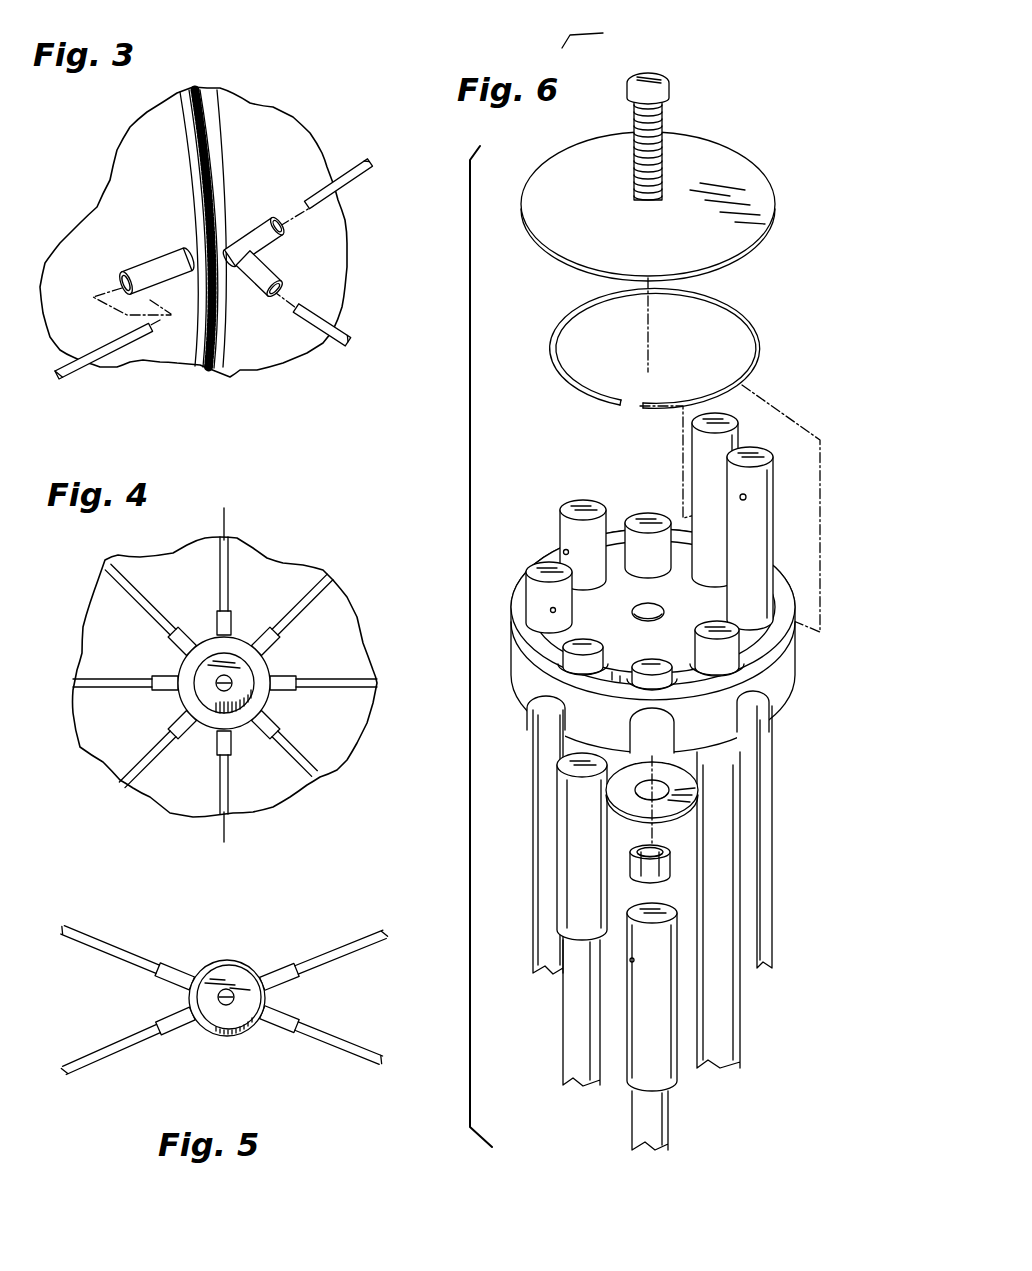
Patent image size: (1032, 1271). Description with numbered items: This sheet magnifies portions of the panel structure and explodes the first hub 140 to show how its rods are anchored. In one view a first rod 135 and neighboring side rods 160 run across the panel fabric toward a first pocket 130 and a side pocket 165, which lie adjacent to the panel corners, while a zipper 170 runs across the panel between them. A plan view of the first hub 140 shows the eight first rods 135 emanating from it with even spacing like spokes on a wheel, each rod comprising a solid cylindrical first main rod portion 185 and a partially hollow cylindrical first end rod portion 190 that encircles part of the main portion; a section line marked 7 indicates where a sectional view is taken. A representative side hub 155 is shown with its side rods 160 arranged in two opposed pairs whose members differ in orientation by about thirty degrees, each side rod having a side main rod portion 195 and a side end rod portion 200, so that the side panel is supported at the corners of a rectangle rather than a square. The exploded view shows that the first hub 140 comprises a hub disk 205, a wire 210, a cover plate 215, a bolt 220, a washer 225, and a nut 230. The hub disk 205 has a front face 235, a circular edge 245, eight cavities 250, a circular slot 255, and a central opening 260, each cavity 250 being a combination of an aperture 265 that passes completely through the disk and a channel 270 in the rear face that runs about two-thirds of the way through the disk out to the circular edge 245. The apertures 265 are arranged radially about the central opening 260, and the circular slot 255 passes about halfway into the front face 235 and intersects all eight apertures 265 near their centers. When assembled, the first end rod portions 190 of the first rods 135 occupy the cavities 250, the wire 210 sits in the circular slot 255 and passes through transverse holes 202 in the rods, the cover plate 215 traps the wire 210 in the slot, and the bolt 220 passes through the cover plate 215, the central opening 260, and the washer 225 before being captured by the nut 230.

In FIG. 4, the section line 7- 7 is at (228, 832).
In FIG. 3, the first pocket 130 is at (136, 266).
In FIG. 3, the first rod 135 is at (113, 358).
In FIG. 4, the first rod 135 is at (323, 692).
In FIG. 6, the first rod 135 is at (774, 844).
In FIG. 4, the first hub 140 is at (196, 636).
In FIG. 6, the first hub 140 is at (654, 236).
In FIG. 5, the side hub 155 is at (230, 960).
In FIG. 3, the side rod 160 is at (345, 170).
In FIG. 5, the side rod 160 is at (327, 954).
In FIG. 3, the side pocket 165 is at (262, 214).
In FIG. 3, the zipper 170 is at (218, 130).
In FIG. 4, the first main rod portion 185 is at (101, 684).
In FIG. 6, the first main rod portion 185 is at (663, 1108).
In FIG. 4, the first end rod portion 190 is at (164, 673).
In FIG. 6, the first end rod portion 190 is at (637, 1050).
In FIG. 5, the side main rod portion 195 is at (83, 1058).
In FIG. 5, the side end rod portion 200 is at (168, 1018).
In FIG. 6, the transverse hole 202 is at (746, 500).
In FIG. 6, the hub disk 205 is at (523, 564).
In FIG. 6, the wire 210 is at (548, 350).
In FIG. 6, the cover plate 215 is at (557, 258).
In FIG. 6, the bolt 220 is at (665, 86).
In FIG. 6, the washer 225 is at (620, 777).
In FIG. 6, the nut 230 is at (632, 858).
In FIG. 6, the front face 235 is at (668, 601).
In FIG. 6, the circular edge 245 is at (783, 678).
In FIG. 6, the cavity 250 is at (580, 652).
In FIG. 6, the circular slot 255 is at (617, 668).
In FIG. 6, the central opening 260 is at (650, 604).
In FIG. 6, the aperture 265 is at (652, 660).
In FIG. 6, the channel 270 is at (764, 710).